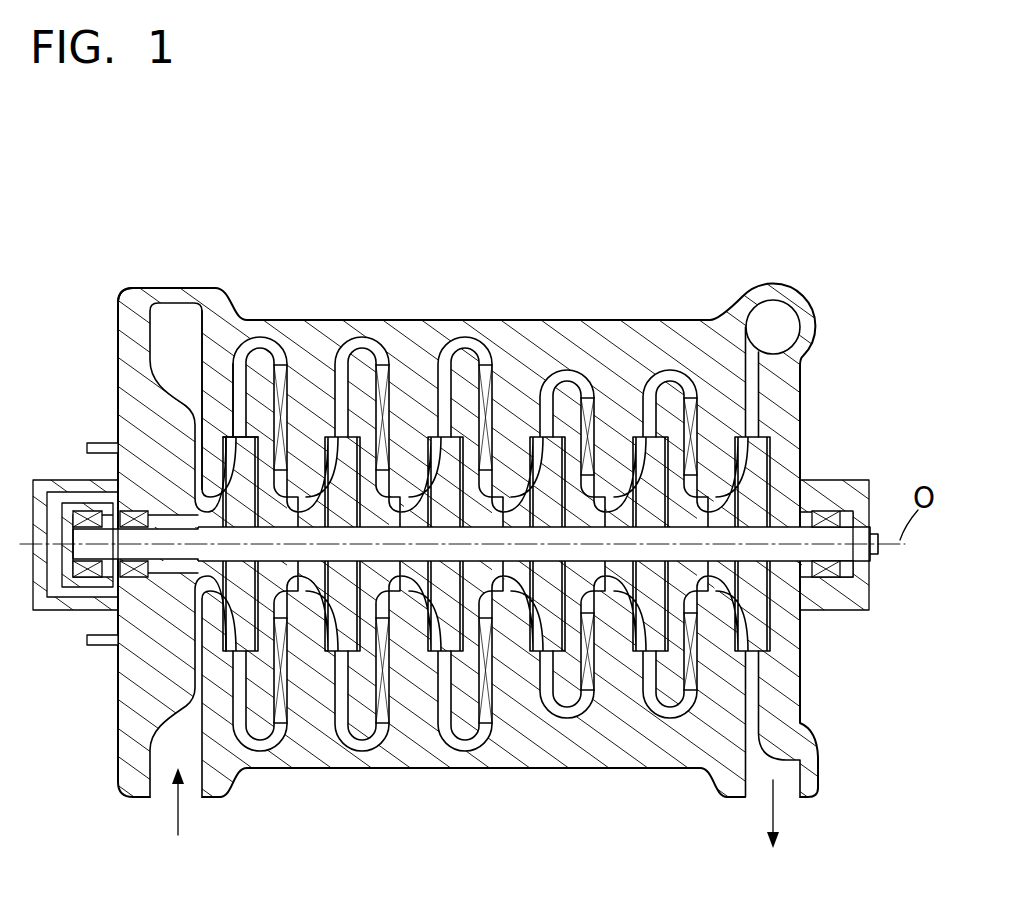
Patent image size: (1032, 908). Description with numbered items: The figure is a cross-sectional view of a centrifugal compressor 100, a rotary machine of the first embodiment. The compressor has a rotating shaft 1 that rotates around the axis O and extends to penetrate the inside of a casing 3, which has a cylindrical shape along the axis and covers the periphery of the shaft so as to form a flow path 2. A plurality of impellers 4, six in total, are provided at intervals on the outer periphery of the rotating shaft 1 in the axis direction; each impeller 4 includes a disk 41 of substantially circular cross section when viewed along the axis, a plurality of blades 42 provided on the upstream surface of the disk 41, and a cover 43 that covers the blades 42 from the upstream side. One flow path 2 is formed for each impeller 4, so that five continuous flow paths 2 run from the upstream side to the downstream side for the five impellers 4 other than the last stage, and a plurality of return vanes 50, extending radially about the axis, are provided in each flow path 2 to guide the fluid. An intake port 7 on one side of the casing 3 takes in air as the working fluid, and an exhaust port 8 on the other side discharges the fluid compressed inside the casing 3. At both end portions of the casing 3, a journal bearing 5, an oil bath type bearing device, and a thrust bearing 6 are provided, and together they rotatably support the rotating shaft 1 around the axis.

The centrifugal compressor 100 is at (773, 188).
The rotating shaft 1 is at (768, 533).
The flow path 2 is at (262, 336).
The casing 3 is at (712, 333).
The impeller 4 is at (274, 645).
The journal bearing 5 is at (837, 515).
The thrust bearing 6 is at (88, 577).
The intake port 7 is at (162, 790).
The exhaust port 8 is at (793, 792).
The disk 41 is at (238, 430).
The blade 42 is at (216, 470).
The cover 43 is at (236, 490).
The return vane 50 is at (282, 420).